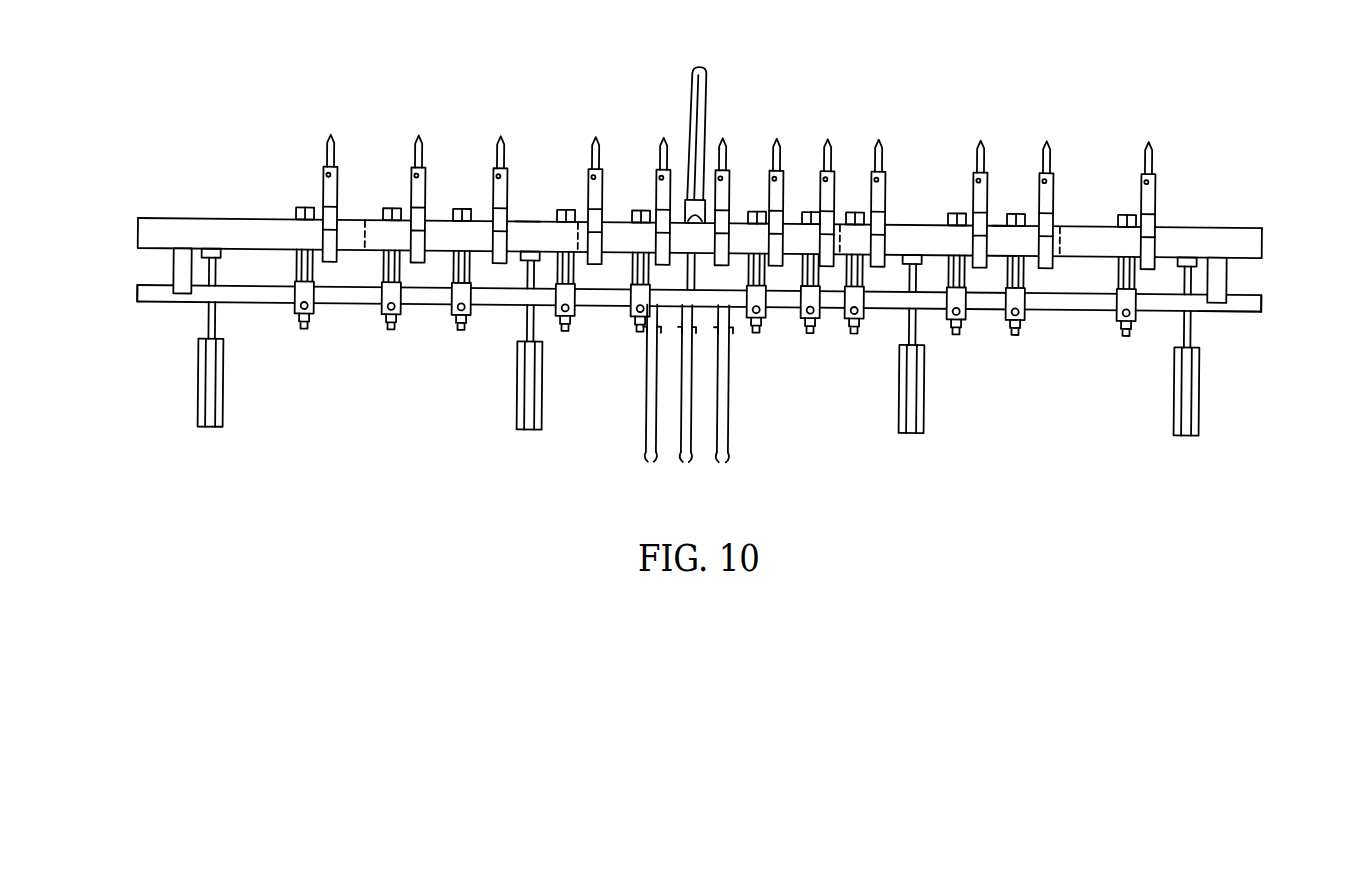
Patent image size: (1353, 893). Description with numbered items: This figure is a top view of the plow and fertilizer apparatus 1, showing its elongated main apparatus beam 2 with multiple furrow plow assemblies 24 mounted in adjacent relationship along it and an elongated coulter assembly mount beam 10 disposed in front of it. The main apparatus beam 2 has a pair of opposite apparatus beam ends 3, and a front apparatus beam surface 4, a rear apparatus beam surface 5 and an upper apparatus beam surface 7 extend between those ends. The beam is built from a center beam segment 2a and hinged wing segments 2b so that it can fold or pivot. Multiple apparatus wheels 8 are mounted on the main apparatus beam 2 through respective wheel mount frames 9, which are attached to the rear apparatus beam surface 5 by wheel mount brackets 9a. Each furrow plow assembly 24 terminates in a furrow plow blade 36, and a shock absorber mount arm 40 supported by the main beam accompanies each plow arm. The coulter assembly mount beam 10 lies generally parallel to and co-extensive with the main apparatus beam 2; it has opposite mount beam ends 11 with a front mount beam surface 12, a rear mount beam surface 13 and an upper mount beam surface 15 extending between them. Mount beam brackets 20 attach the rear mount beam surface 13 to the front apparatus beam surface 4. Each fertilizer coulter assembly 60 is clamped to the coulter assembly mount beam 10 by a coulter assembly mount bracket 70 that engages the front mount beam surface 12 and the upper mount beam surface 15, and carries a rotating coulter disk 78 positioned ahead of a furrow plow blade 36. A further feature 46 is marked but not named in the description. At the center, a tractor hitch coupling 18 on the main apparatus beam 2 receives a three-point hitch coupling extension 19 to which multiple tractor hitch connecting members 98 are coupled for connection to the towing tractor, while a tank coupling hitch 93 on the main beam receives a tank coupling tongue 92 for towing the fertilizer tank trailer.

The plow and fertilizer apparatus 1 is at (700, 283).
The main apparatus beam 2 is at (146, 210).
The center beam segment 2a is at (909, 211).
The wing segment 2b is at (246, 212).
The apparatus beam ends 3 is at (696, 175).
The front apparatus beam surface 4 is at (272, 250).
The rear apparatus beam surface 5 is at (277, 216).
The upper apparatus beam surface 7 is at (213, 220).
The apparatus wheels 8 is at (213, 428).
The wheel mount frames 9 is at (207, 325).
The wheel mount brackets 9a is at (234, 231).
The coulter assembly mount beam 10 is at (705, 339).
The mount beam ends 11 is at (137, 291).
The front mount beam surface 12 is at (1230, 303).
The rear mount beam surface 13 is at (1198, 283).
The upper mount beam surface 15 is at (257, 303).
The tractor hitch coupling 18 is at (695, 260).
The three-point hitch coupling extension 19 is at (673, 302).
The mount beam bracket 20 is at (190, 260).
The furrow plow assembly 24 is at (740, 162).
The furrow plow blade 36 is at (414, 150).
The shock absorber mount arm 40 is at (411, 186).
The pivot location 46 is at (528, 210).
The fertilizer coulter assembly 60 is at (447, 346).
The coulter assembly mount bracket 70 is at (448, 296).
The coulter disk 78 is at (404, 216).
The tank coupling tongue 92 is at (705, 95).
The tank coupling hitch 93 is at (707, 196).
The tractor hitch connecting members 98 is at (725, 452).